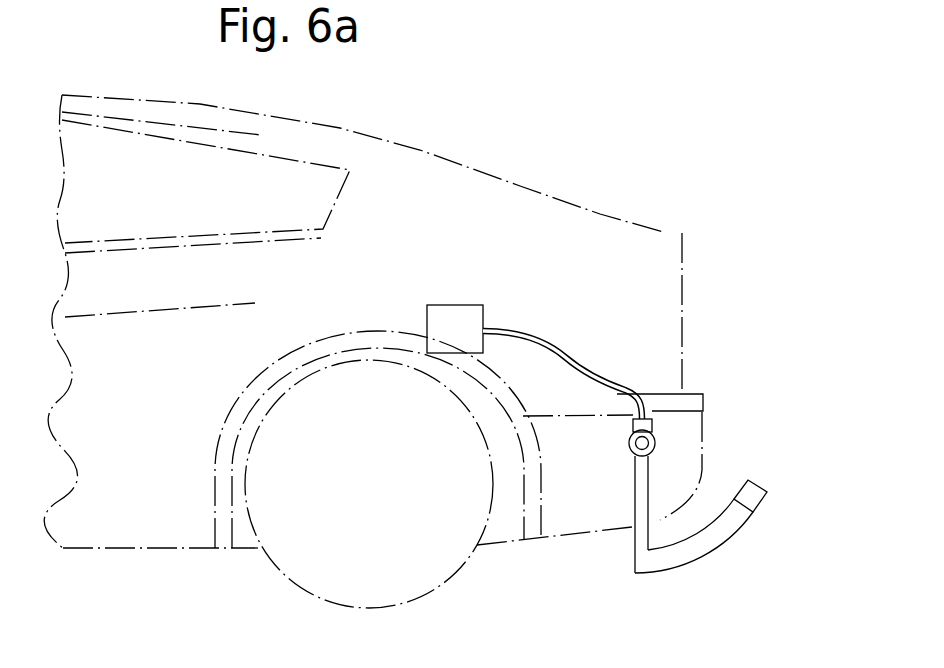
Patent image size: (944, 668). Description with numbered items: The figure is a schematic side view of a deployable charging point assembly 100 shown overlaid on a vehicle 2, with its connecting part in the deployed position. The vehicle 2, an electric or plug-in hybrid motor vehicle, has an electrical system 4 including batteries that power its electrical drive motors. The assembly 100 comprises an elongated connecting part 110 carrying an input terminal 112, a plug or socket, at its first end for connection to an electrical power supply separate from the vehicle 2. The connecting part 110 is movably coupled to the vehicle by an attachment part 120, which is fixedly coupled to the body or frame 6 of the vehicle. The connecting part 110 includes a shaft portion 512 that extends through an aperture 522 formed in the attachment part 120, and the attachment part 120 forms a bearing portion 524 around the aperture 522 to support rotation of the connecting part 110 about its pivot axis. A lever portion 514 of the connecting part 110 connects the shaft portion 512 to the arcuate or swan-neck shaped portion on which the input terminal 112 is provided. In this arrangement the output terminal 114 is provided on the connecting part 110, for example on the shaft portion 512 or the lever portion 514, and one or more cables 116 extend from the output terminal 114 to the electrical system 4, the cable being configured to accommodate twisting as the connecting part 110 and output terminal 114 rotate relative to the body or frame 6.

The vehicle 2 is at (592, 82).
The body or frame 6 is at (570, 205).
The electrical system 4 is at (453, 305).
The cables 116 is at (577, 362).
The output terminal 114 is at (647, 415).
The aperture 522 is at (651, 436).
The bearing portion 524 is at (628, 437).
The shaft portion 512 is at (641, 445).
The attachment part 120 is at (657, 442).
The lever portion 514 is at (637, 508).
The connecting part 110 is at (700, 546).
The input terminal 112 is at (757, 487).
The deployable charging point assembly 100 is at (598, 607).